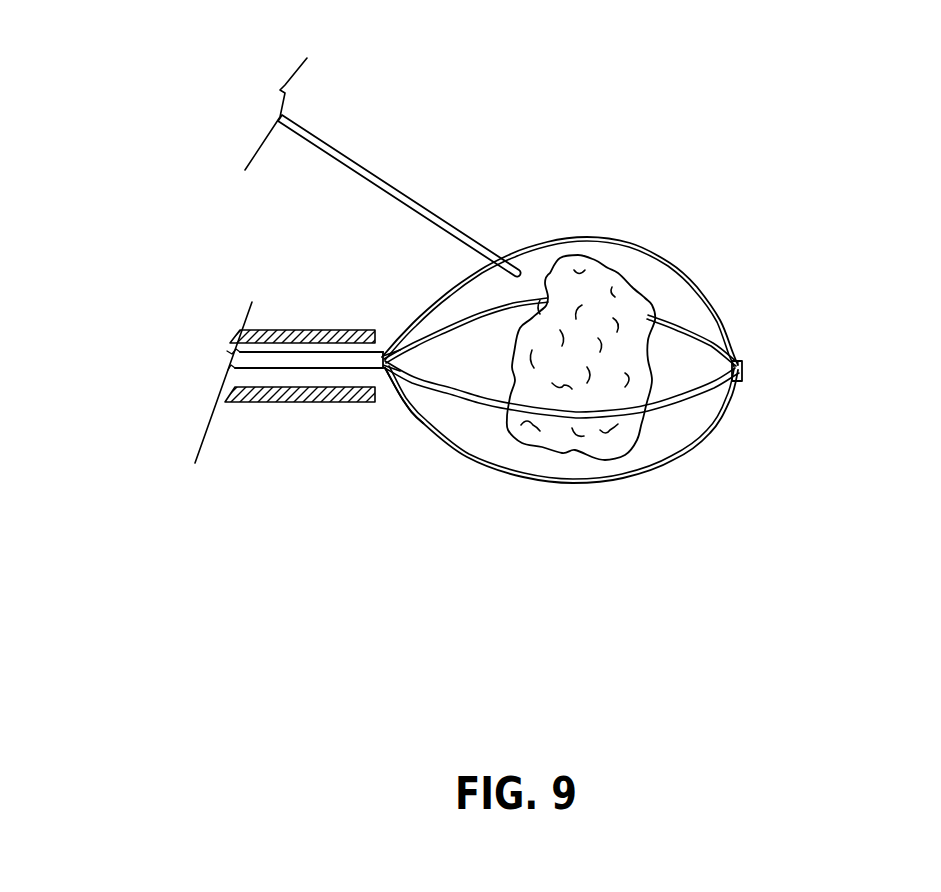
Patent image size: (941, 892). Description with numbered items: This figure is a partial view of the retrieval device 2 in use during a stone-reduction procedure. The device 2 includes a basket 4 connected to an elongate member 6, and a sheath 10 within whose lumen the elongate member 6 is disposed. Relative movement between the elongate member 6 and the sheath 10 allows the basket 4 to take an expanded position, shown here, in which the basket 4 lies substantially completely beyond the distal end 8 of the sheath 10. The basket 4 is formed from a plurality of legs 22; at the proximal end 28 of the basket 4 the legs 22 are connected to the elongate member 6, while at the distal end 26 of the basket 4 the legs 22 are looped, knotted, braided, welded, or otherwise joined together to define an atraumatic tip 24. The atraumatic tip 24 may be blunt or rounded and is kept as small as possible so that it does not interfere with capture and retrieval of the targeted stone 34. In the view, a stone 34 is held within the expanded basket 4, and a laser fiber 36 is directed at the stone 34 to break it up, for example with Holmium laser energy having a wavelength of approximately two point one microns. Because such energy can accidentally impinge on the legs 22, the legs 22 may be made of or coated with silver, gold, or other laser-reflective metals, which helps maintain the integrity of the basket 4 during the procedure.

The retrieval device 2 is at (267, 403).
The basket 4 is at (597, 374).
The elongate member 6 is at (282, 274).
The distal end of the sheath 8 is at (355, 279).
The sheath 10 is at (267, 420).
The legs 22 is at (598, 404).
The atraumatic tip 24 is at (817, 322).
The distal end of the basket 26 is at (631, 469).
The proximal end of the basket 28 is at (357, 491).
The stone 34 is at (601, 459).
The laser fiber 36 is at (383, 160).